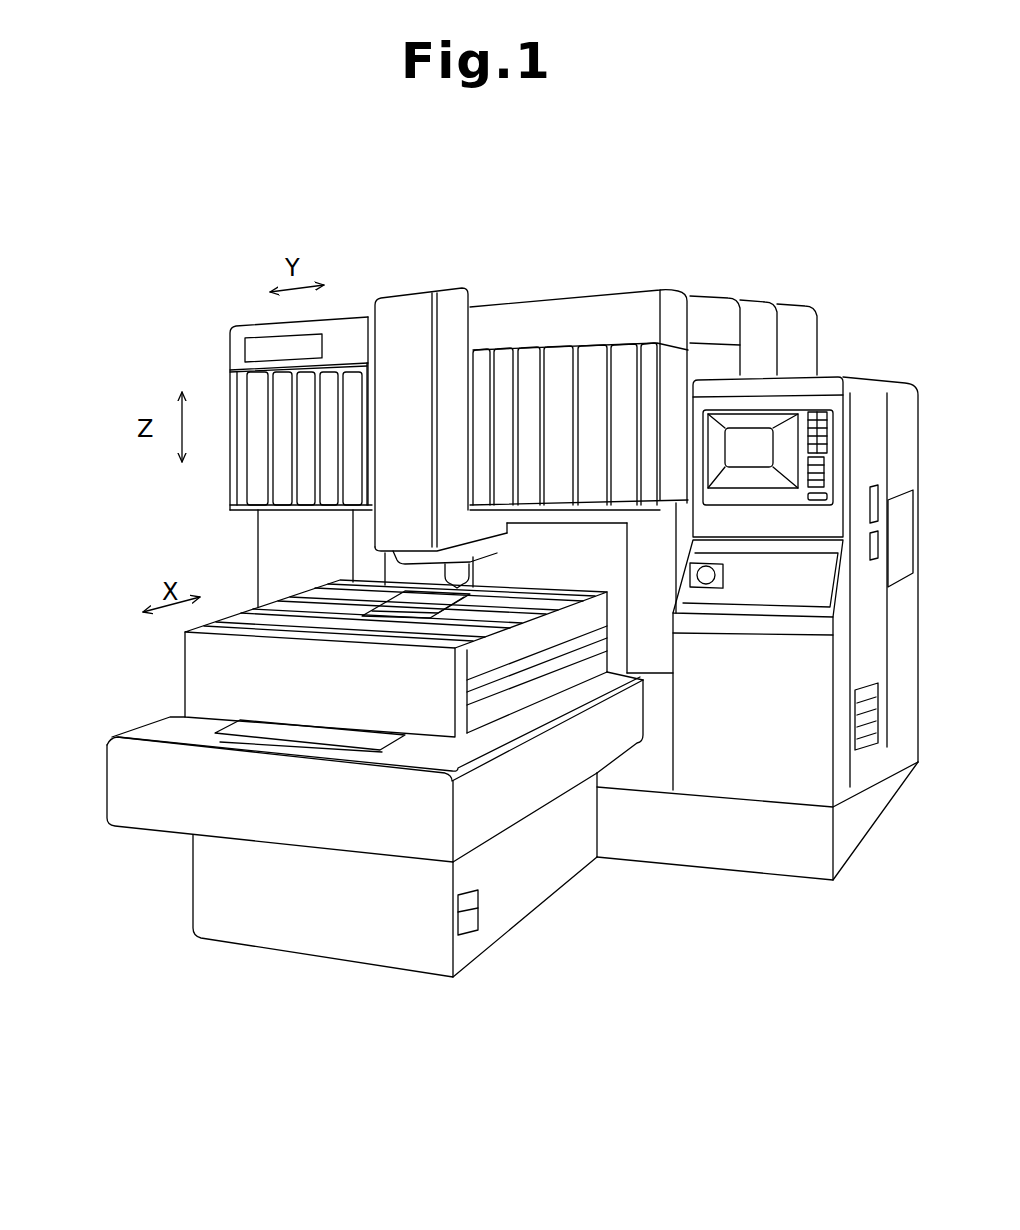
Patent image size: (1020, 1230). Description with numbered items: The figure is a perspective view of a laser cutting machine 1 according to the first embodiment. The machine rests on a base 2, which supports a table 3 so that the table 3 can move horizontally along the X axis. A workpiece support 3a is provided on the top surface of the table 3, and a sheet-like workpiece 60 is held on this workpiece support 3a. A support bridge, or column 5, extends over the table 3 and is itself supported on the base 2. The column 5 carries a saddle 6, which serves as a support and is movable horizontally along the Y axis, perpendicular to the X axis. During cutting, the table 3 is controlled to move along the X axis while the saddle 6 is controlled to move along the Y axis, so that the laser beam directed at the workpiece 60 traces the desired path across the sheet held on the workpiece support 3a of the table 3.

The laser cutting machine 1 is at (515, 229).
The base 2 is at (108, 802).
The table 3 is at (180, 672).
The workpiece support 3a is at (246, 622).
The column 5 is at (635, 290).
The saddle 6 is at (400, 292).
The workpiece 60 is at (398, 613).